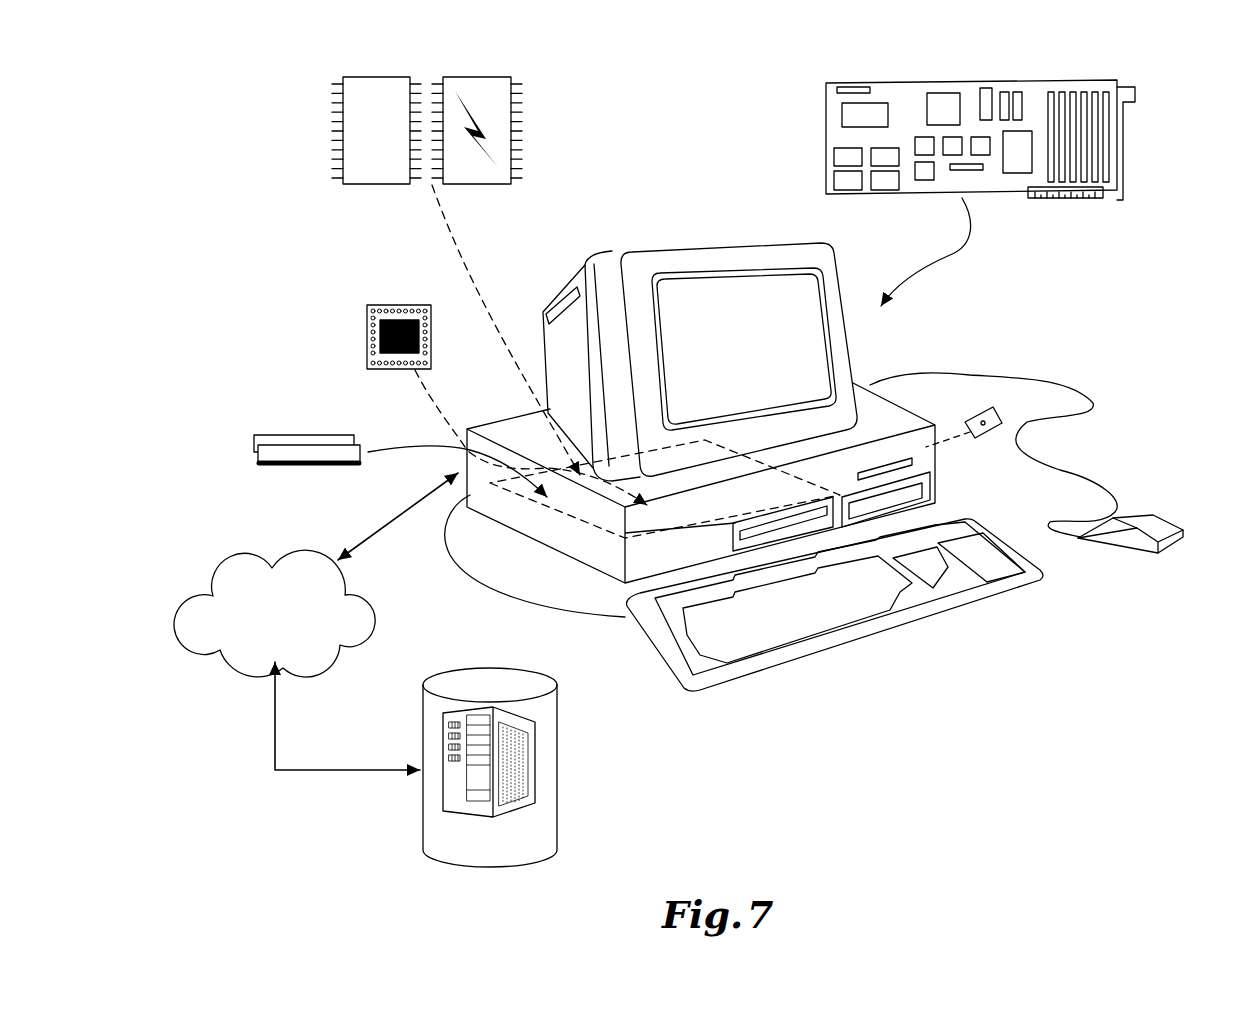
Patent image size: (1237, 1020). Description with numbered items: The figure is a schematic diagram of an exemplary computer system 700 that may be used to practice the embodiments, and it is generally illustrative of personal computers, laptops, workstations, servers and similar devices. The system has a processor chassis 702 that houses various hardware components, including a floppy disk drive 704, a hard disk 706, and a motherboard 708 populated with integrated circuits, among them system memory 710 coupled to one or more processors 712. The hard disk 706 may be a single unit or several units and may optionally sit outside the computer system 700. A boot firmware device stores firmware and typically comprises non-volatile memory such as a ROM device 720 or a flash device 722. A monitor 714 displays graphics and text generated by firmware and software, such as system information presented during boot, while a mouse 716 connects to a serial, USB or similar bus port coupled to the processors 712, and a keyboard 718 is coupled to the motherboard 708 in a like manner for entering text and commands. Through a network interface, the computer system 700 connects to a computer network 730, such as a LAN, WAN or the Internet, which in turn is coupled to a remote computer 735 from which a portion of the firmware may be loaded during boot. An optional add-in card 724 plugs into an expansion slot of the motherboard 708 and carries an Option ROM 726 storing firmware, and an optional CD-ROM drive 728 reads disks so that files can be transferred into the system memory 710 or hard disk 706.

The computer system 700 is at (839, 527).
The processor chassis 702 is at (940, 442).
The floppy disk drive 704 is at (897, 458).
The hard disk 706 is at (910, 492).
The motherboard 708 is at (567, 520).
The system memory 710 is at (282, 442).
The processor 712 is at (427, 352).
The monitor 714 is at (848, 305).
The mouse 716 is at (1158, 552).
The keyboard 718 is at (933, 617).
The ROM device 720 is at (376, 173).
The flash device 722 is at (482, 175).
The add-in card 724 is at (1117, 130).
The Option ROM 726 is at (851, 117).
The CD-ROM drive 728 is at (740, 548).
The computer network 730 is at (313, 658).
The remote computer 735 is at (557, 732).